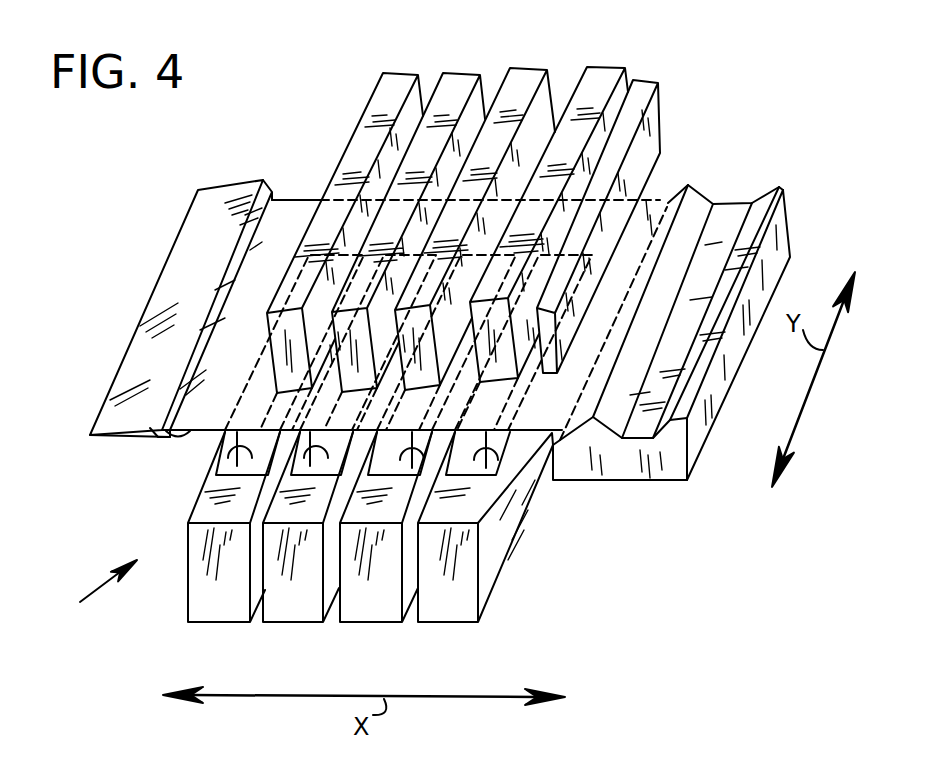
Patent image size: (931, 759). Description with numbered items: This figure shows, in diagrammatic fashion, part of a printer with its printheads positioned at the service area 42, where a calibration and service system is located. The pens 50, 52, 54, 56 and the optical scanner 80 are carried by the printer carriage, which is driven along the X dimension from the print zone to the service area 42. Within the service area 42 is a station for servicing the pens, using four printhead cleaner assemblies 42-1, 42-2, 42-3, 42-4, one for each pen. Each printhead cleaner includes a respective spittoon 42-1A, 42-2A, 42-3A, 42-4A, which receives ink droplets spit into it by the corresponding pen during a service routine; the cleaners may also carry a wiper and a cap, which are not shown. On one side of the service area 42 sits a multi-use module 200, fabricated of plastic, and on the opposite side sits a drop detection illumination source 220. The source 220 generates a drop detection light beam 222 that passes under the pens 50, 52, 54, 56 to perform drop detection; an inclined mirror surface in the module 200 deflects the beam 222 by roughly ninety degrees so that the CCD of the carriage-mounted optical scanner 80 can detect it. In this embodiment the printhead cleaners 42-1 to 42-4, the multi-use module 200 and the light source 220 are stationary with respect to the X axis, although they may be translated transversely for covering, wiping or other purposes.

The service area 42 is at (87, 594).
The printhead cleaner assembly 42-1 is at (463, 597).
The printhead cleaner assembly 42-2 is at (368, 585).
The printhead cleaner assembly 42-3 is at (309, 600).
The printhead cleaner assembly 42-4 is at (222, 597).
The spittoon 42-1A is at (487, 461).
The spittoon 42-2A is at (435, 460).
The spittoon 42-3A is at (313, 452).
The spittoon 42-4A is at (237, 442).
The pen 50 is at (600, 78).
The pen 52 is at (527, 83).
The pen 54 is at (462, 90).
The pen 56 is at (380, 97).
The optical scanner 80 is at (645, 88).
The multi-use module 200 is at (712, 388).
The drop detection illumination source 220 is at (192, 252).
The drop detection light beam 222 is at (158, 430).